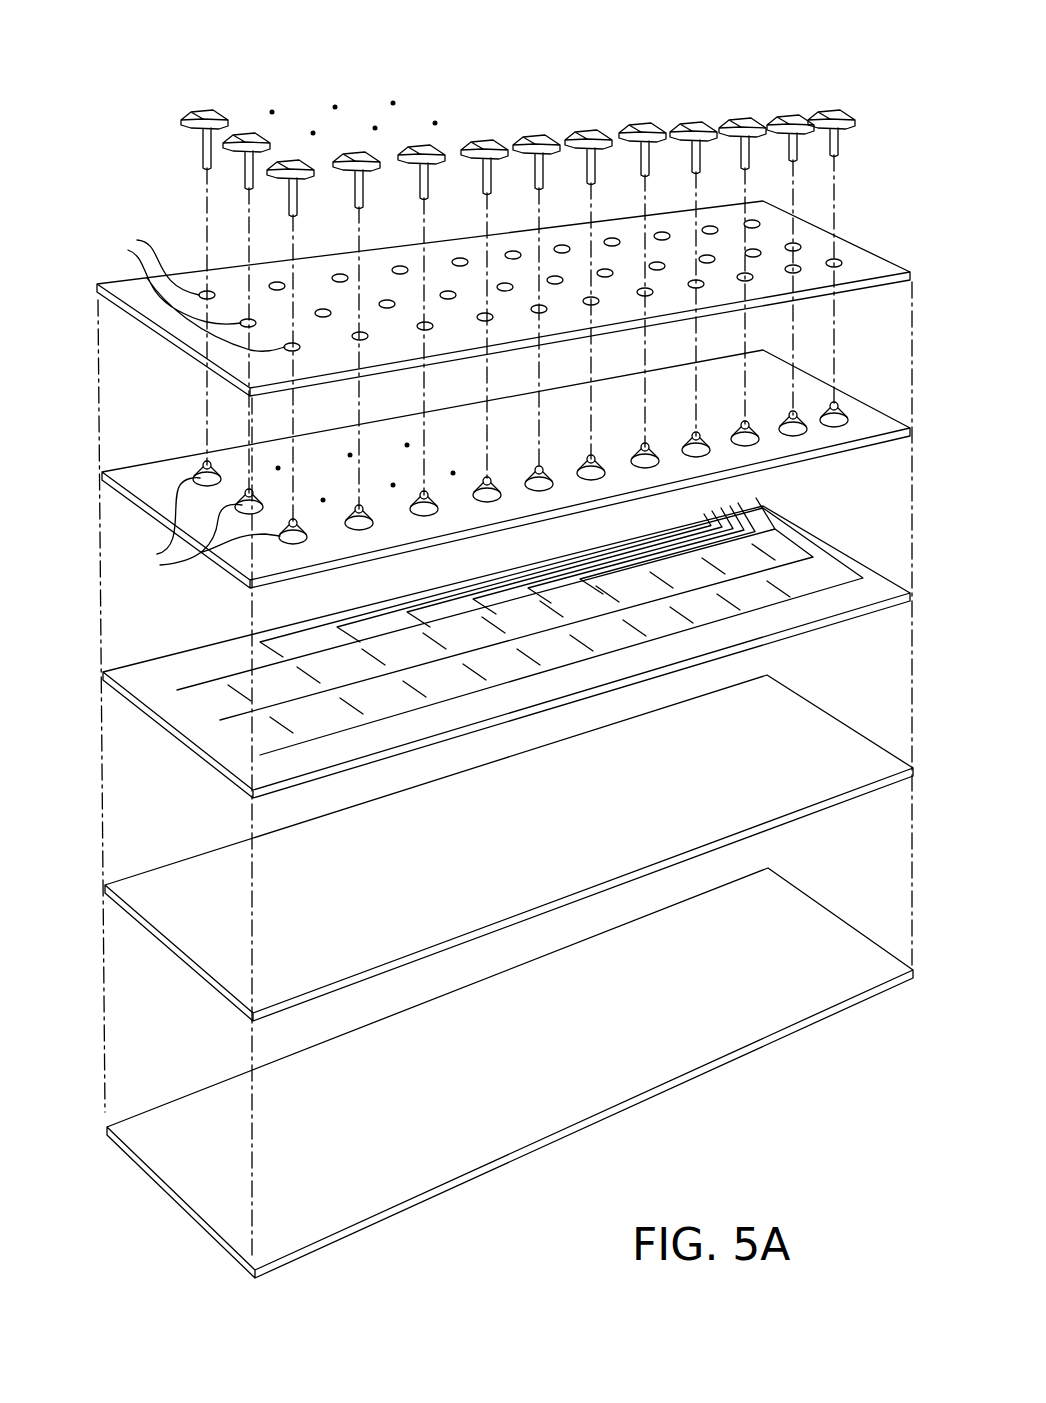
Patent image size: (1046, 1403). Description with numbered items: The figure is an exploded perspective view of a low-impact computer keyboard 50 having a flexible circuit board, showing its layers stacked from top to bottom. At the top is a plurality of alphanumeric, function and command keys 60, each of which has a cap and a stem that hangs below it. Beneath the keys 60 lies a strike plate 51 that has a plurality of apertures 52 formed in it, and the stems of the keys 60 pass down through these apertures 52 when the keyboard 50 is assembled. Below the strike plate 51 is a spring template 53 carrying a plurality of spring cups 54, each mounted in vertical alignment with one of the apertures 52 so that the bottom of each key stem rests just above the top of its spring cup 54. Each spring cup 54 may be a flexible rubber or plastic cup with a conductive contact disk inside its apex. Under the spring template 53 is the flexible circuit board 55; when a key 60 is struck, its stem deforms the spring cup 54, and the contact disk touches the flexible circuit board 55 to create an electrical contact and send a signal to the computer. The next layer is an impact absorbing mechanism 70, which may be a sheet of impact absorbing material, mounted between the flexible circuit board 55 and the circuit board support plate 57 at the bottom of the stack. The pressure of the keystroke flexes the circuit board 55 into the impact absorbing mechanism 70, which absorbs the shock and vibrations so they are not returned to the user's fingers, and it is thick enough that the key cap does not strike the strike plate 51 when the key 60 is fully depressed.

The low-impact keyboard 50 is at (229, 78).
The keys 60 is at (166, 139).
The strike plate 51 is at (178, 352).
The apertures 52 is at (473, 285).
The spring template 53 is at (228, 572).
The spring cups 54 is at (485, 489).
The flexible circuit board 55 is at (210, 745).
The impact absorbing mechanism 70 is at (218, 968).
The circuit board support plate 57 is at (178, 1172).